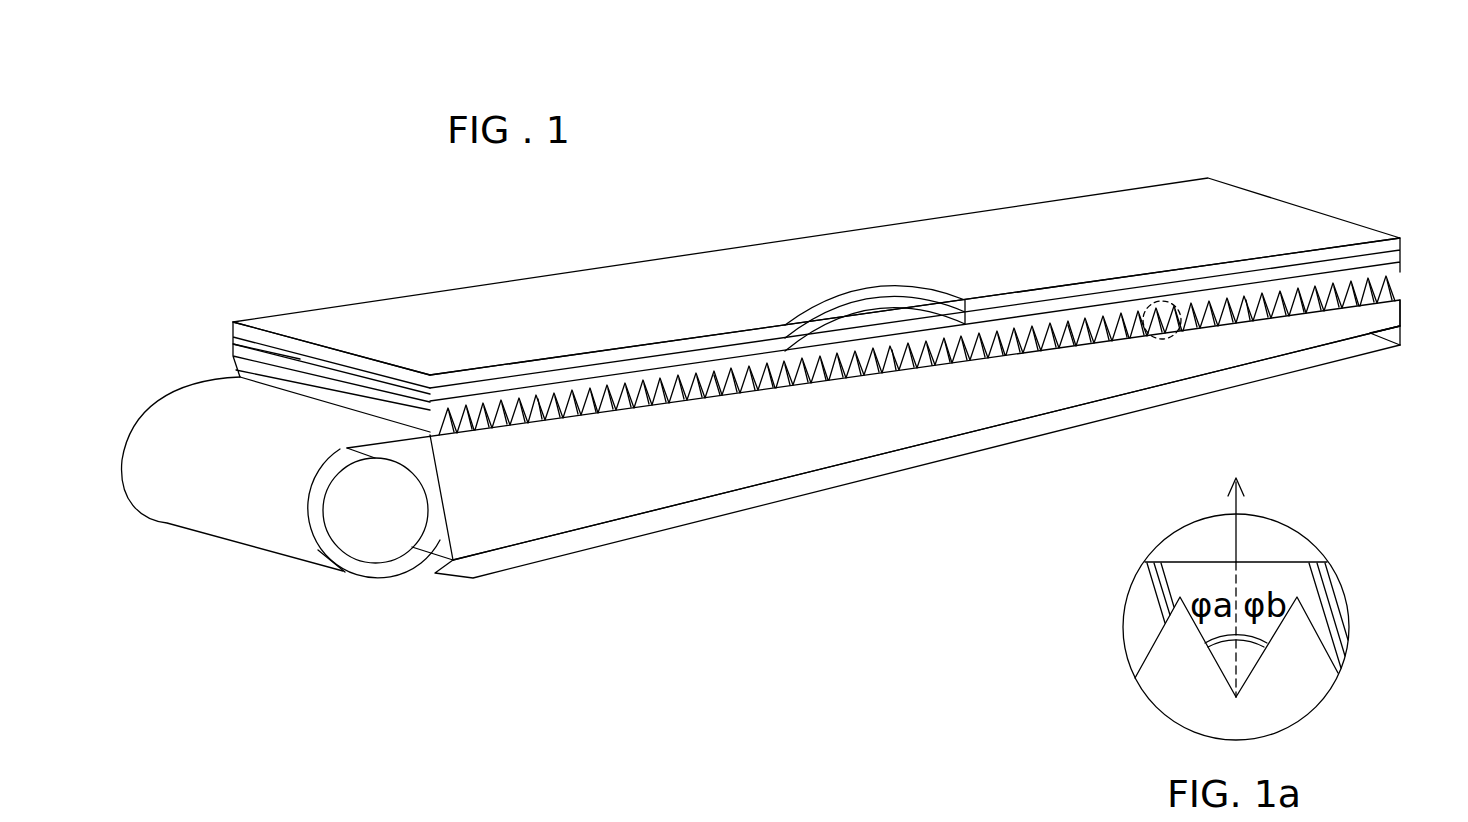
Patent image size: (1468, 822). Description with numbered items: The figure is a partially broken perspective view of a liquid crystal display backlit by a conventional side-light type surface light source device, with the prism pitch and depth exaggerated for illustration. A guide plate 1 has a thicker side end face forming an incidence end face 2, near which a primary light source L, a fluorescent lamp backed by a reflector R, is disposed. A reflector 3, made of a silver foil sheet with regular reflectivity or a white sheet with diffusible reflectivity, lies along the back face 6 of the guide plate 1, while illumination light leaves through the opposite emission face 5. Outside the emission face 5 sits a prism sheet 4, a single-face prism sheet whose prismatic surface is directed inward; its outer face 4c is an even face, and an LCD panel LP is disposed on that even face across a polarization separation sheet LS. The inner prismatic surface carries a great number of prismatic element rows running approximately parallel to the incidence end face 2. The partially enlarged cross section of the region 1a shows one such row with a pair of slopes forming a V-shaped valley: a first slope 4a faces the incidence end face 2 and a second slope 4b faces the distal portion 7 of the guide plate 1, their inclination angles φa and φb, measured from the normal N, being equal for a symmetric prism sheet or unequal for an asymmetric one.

In FIG. 1, the guide plate 1 is at (590, 490).
In FIG. 1, the detail region of tooth 1a is at (1162, 339).
In FIG. 1, the incidence end face 2 is at (440, 538).
In FIG. 1, the reflector 3 is at (838, 488).
In FIG. 1, the prism sheet 4 is at (1388, 274).
In FIG. 1a, the first slope 4a is at (1196, 638).
In FIG. 1a, the second slope 4b is at (1278, 640).
In FIG. 1, the outer face 4c is at (862, 330).
In FIG. 1a, the outer face 4c is at (1273, 558).
In FIG. 1, the emission face 5 is at (713, 400).
In FIG. 1, the back face 6 is at (658, 510).
In FIG. 1, the distal portion 7 is at (1406, 315).
In FIG. 1, the primary light source L is at (395, 531).
In FIG. 1, the reflector R is at (235, 528).
In FIG. 1, the LCD panel LP is at (232, 322).
In FIG. 1, the polarization separation sheet LS is at (245, 340).
In FIG. 1a, the normal direction N is at (1240, 507).